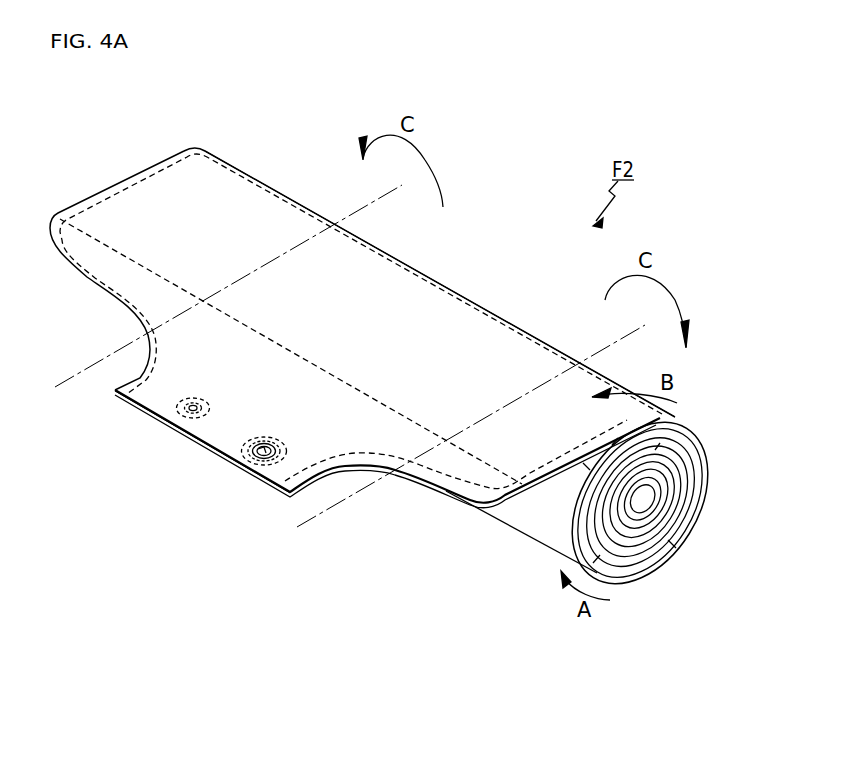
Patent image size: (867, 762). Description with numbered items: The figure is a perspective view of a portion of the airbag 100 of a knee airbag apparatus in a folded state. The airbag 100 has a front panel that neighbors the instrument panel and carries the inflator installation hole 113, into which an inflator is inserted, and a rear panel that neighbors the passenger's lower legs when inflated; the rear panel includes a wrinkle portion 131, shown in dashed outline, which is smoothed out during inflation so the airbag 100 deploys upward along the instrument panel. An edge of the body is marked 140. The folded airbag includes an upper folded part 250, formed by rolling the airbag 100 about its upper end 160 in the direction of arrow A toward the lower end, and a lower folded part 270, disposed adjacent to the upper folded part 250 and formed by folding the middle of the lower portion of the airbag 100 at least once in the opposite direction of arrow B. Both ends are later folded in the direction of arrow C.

The airbag 100 is at (127, 177).
The wrinkle portion 131 is at (177, 182).
The inflator installation hole 113 is at (252, 461).
The side edge of housing 140 is at (203, 448).
The upper end of the airbag 160 is at (655, 484).
The upper folded part 250 is at (658, 571).
The lower folded part 270 is at (479, 294).